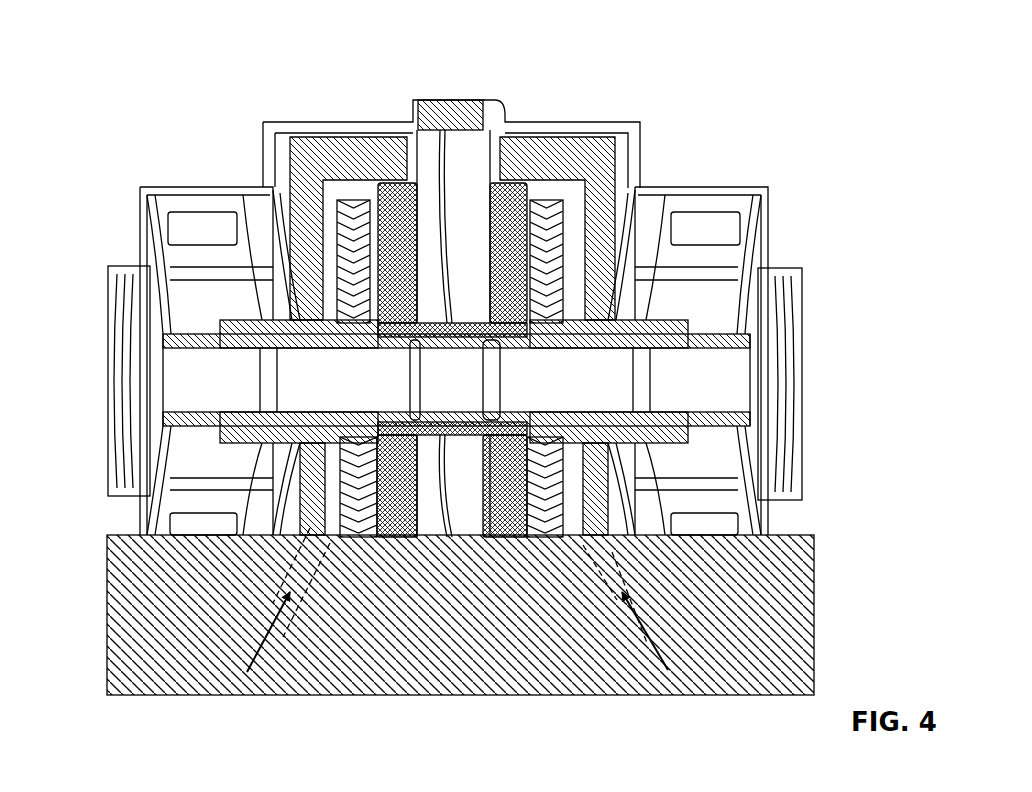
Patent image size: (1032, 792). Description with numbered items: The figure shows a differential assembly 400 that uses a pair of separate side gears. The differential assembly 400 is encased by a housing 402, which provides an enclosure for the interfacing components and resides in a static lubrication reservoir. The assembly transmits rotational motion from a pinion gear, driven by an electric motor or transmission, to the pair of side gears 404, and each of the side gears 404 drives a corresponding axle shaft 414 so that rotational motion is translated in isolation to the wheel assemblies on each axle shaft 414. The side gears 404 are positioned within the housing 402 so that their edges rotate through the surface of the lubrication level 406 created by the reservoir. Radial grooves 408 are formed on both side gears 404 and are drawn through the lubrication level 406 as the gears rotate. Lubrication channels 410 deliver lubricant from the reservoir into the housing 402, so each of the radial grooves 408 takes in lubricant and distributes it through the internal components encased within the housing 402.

The differential assembly 400 is at (125, 42).
The housing 402 is at (333, 157).
The side gears 404 is at (300, 300).
The lubrication level 406 is at (107, 558).
The radial grooves 408 is at (352, 200).
The lubrication channels 410 is at (248, 632).
The axle shaft 414 is at (185, 381).